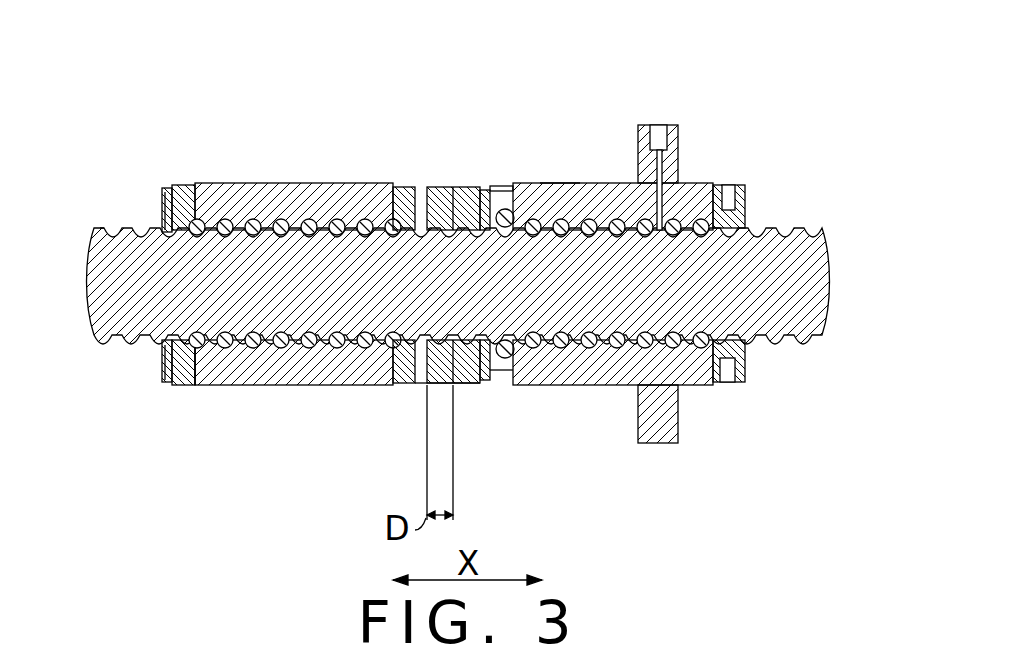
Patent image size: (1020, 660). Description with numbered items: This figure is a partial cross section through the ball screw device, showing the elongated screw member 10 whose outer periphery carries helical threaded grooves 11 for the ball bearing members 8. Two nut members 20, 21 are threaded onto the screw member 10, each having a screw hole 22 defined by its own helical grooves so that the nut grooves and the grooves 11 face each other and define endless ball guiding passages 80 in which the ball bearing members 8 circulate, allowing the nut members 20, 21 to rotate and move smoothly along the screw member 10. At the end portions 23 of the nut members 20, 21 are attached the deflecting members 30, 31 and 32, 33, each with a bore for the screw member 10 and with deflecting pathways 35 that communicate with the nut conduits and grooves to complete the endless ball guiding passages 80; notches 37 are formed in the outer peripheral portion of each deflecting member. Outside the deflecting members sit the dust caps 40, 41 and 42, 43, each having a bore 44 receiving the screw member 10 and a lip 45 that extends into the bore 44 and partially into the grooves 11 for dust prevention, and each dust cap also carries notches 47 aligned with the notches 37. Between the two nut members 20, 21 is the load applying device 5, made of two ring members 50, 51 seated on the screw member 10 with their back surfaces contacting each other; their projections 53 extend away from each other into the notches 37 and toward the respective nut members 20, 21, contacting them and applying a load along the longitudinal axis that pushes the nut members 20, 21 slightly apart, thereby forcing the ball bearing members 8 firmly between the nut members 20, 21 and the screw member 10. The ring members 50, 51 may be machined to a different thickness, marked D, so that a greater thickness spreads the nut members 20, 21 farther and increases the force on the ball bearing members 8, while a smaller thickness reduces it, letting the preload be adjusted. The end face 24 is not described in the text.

The load applying device 5 is at (483, 283).
The ball bearing members 8 is at (614, 350).
The screw member 10 is at (815, 285).
The helical threaded grooves 11 is at (120, 228).
The nut member 20 is at (308, 193).
The nut member 21 is at (682, 145).
The screw hole 22 is at (267, 222).
The end portions 23 is at (608, 184).
The end face of first nut 24 is at (197, 348).
The deflecting member 30 is at (185, 192).
The deflecting member 31 is at (403, 384).
The deflecting member 32 is at (514, 372).
The deflecting member 33 is at (715, 386).
The deflecting pathways 35 is at (561, 184).
The notches 37 is at (485, 188).
The dust cap 40 is at (172, 344).
The dust cap 41 is at (419, 385).
The dust cap 42 is at (485, 383).
The dust cap 43 is at (738, 384).
The bore 44 is at (748, 228).
The lip 45 is at (748, 347).
The notches 47 is at (506, 186).
The ring member 50 is at (436, 188).
The ring member 51 is at (452, 184).
The projections 53 is at (494, 383).
The endless ball guiding passages 80 is at (308, 347).